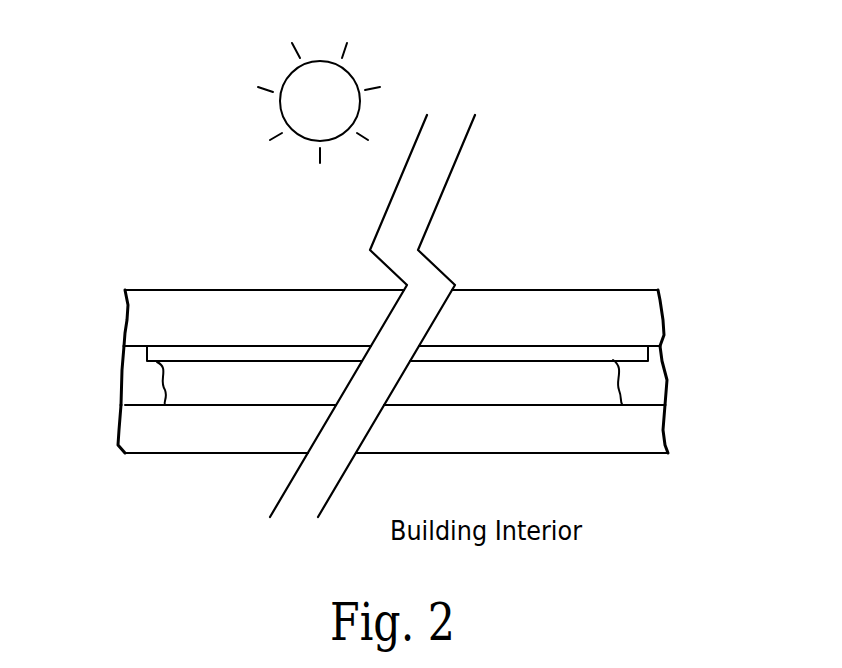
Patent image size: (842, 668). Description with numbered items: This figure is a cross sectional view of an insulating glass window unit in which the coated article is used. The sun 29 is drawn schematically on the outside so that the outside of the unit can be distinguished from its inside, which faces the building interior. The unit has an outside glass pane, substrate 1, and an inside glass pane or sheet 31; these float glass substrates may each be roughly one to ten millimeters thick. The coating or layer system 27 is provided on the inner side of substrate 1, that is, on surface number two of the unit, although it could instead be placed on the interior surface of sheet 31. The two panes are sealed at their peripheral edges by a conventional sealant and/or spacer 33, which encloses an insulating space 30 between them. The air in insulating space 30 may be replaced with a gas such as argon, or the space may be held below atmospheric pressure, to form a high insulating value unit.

The substrate 1 is at (627, 315).
The coating or layer system 27 is at (633, 352).
The sun 29 is at (345, 85).
The insulating space 30 is at (530, 385).
The inside glass pane or sheet 31 is at (636, 433).
The sealant and/or spacer 33 is at (143, 378).